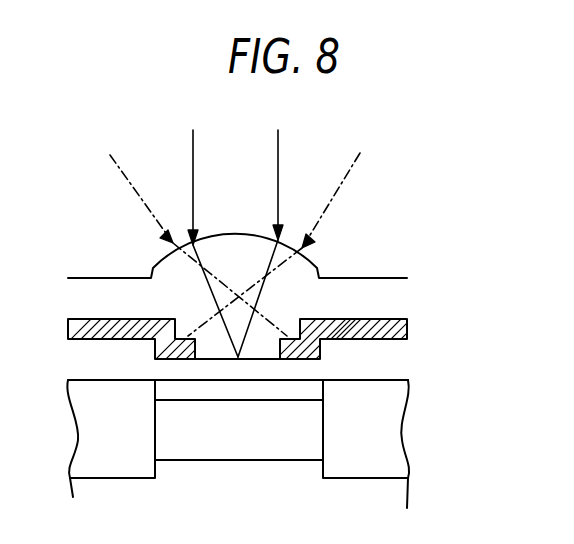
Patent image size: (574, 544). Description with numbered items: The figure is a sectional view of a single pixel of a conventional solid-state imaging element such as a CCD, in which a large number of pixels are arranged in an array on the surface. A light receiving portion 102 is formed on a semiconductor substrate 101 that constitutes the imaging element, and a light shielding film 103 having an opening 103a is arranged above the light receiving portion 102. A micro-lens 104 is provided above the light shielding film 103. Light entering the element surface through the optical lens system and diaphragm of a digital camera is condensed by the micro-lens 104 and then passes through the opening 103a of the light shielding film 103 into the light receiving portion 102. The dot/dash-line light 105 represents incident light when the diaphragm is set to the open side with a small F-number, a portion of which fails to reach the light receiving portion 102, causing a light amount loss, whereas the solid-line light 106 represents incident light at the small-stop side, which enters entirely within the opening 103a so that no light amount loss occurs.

The semiconductor substrate 101 is at (415, 487).
The light receiving portion 102 is at (236, 452).
The light shielding film 103 is at (384, 318).
The opening 103a is at (279, 351).
The micro-lens 104 is at (313, 266).
The incident light at open-side diaphragm 105 is at (343, 186).
The incident light at small-stop-side diaphragm 106 is at (279, 170).